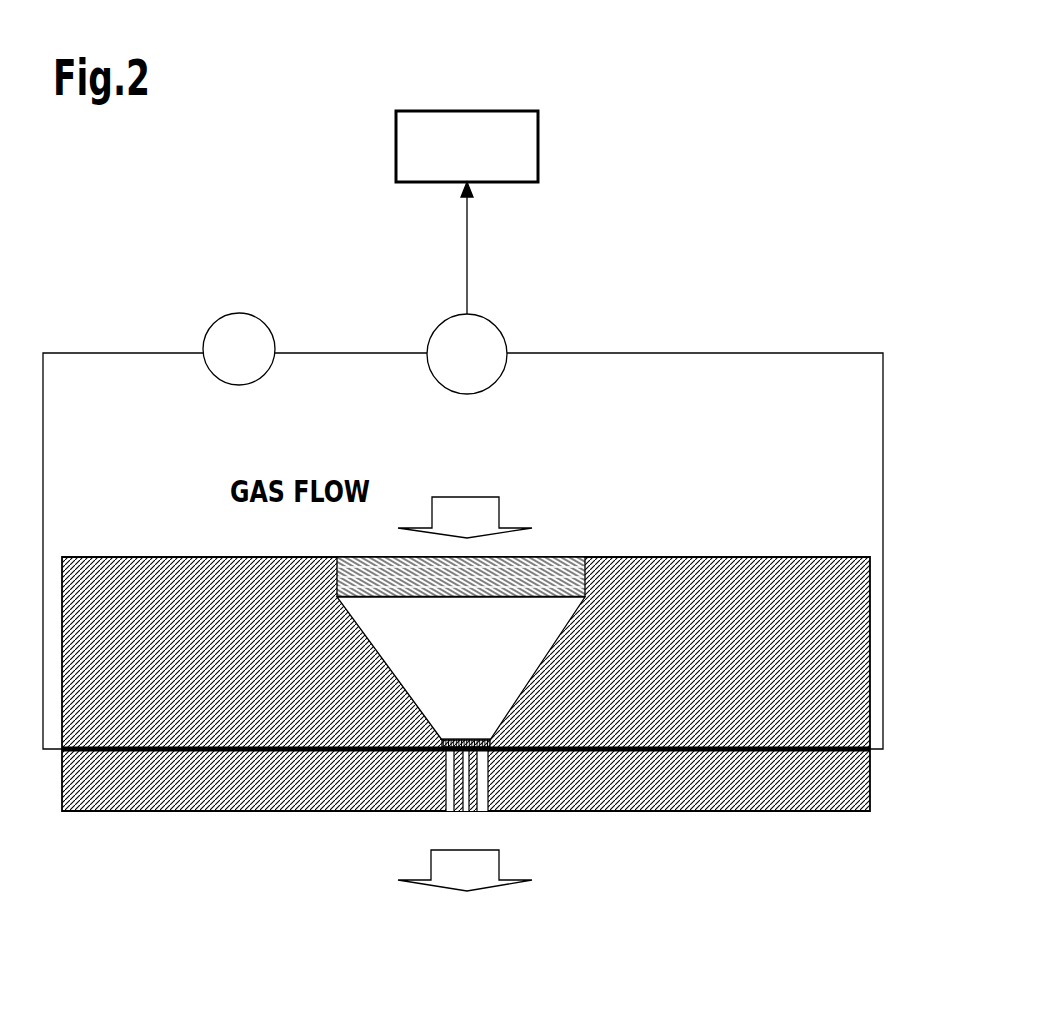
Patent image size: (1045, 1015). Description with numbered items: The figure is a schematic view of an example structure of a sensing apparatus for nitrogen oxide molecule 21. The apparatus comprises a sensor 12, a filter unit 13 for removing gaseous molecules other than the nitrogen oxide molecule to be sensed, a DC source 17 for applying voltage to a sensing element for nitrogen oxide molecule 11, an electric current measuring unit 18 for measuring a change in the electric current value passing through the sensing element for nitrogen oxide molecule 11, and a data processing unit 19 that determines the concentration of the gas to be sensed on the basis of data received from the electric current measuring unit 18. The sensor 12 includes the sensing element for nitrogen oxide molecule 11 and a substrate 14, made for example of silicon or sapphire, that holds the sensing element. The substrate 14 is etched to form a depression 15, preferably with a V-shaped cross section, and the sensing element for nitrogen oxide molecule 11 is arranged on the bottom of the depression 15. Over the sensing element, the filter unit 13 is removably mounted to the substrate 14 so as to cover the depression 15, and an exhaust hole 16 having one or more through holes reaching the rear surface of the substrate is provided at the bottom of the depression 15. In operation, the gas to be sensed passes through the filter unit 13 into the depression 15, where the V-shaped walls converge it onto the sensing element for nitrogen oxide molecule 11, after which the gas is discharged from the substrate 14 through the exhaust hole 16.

The sensing element for nitrogen oxide molecule 11 is at (467, 737).
The sensor 12 is at (211, 800).
The filter unit 13 is at (547, 557).
The substrate 14 is at (743, 557).
The depression 15 is at (528, 648).
The exhaust hole 16 is at (479, 812).
The DC source 17 is at (233, 313).
The electric current measuring unit 18 is at (498, 323).
The data processing unit 19 is at (538, 150).
The sensing apparatus for nitrogen oxide molecule 21 is at (668, 324).